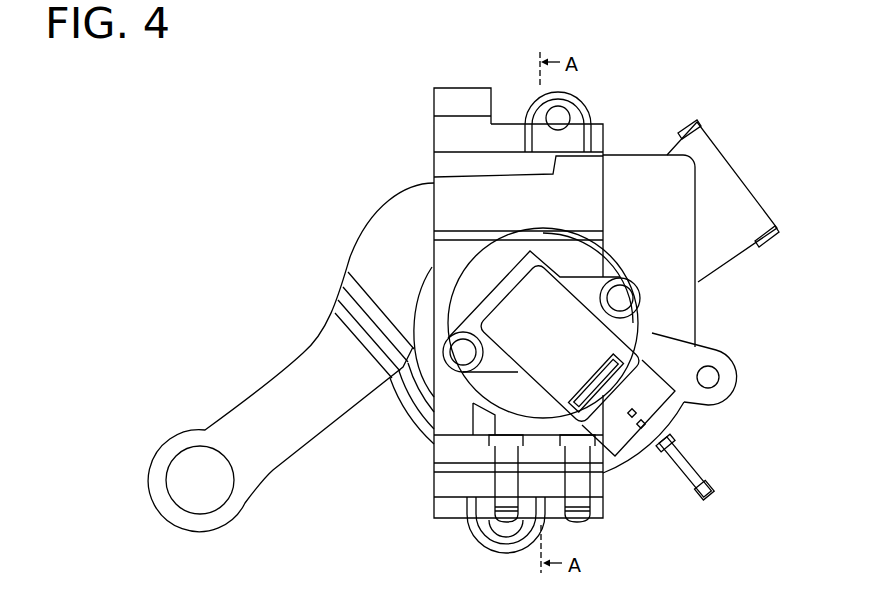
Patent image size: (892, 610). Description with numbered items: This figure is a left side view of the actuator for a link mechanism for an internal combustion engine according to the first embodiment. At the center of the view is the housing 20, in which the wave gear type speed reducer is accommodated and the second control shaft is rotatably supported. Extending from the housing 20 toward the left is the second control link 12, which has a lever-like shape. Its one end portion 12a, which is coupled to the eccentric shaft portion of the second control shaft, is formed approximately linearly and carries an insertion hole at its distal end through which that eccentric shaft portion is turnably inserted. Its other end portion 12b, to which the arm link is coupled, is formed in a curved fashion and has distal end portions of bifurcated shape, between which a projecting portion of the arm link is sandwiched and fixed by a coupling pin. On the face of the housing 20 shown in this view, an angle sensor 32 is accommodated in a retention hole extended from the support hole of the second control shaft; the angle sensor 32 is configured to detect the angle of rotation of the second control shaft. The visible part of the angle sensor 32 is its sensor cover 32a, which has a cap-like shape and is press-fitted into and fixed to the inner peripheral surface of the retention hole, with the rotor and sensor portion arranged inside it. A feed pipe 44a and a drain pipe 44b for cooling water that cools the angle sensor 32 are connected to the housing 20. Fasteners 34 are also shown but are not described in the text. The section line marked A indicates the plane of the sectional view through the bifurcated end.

The second control link 12 is at (247, 394).
The one end portion 12a is at (180, 442).
The other end portion 12b is at (405, 220).
The housing 20 is at (429, 476).
The angle sensor 32 is at (509, 420).
The sensor cover 32a is at (367, 328).
The mounting bolt boss 34 is at (455, 352).
The feed pipe 44a is at (577, 487).
The drain pipe 44b is at (504, 499).